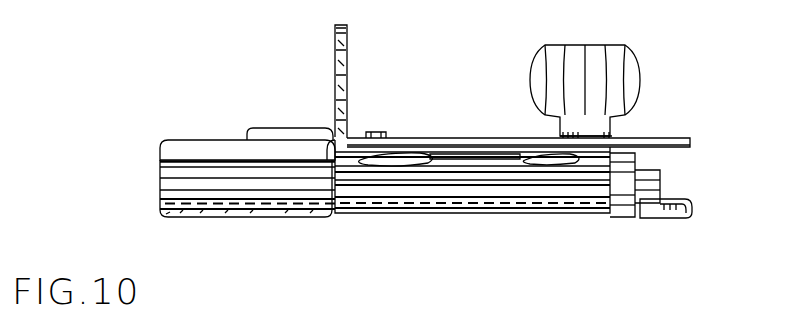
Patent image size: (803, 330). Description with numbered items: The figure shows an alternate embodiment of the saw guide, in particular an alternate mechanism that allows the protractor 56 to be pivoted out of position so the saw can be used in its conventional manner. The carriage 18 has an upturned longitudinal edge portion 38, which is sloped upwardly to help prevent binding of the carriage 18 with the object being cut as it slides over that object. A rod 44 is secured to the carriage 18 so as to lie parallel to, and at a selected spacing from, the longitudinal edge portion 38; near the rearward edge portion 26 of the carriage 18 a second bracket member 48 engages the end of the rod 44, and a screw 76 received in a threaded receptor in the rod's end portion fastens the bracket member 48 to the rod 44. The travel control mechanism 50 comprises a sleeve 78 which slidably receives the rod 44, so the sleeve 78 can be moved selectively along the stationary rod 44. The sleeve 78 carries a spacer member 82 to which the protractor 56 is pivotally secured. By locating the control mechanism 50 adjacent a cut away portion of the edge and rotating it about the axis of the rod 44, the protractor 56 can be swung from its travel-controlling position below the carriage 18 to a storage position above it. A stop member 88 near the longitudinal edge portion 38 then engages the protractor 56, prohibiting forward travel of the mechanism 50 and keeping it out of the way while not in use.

The carriage 18 is at (238, 219).
The rearward edge portion 26 is at (688, 204).
The longitudinal edge portion 38 is at (179, 143).
The rod 44 is at (277, 192).
The second bracket member 48 is at (637, 220).
The travel control mechanism 50 is at (552, 212).
The protractor 56 is at (423, 131).
The screw 76 is at (660, 185).
The sleeve 78 is at (398, 200).
The spacer member 82 is at (477, 132).
The stop member 88 is at (292, 129).